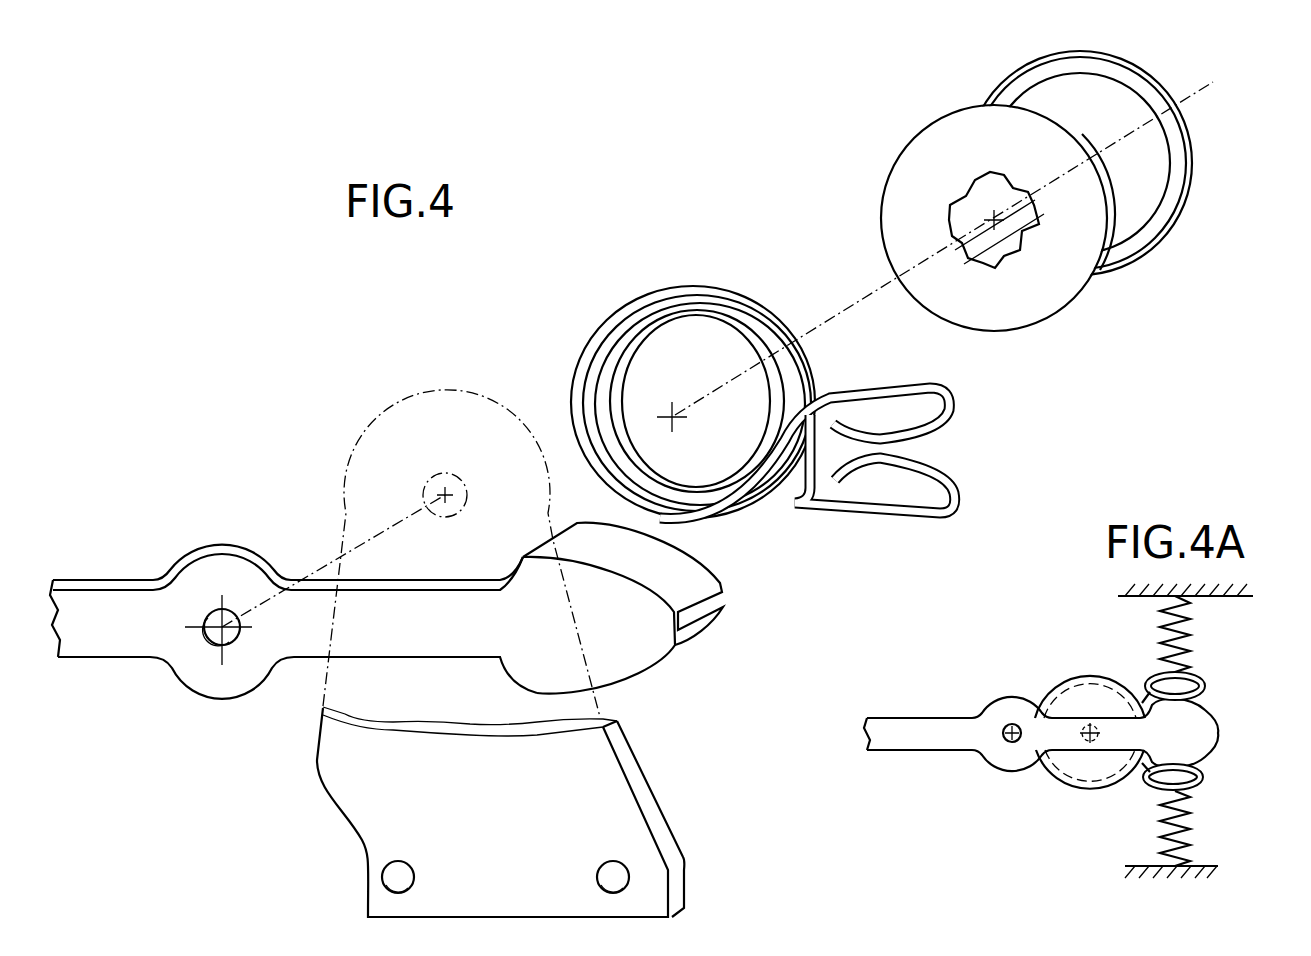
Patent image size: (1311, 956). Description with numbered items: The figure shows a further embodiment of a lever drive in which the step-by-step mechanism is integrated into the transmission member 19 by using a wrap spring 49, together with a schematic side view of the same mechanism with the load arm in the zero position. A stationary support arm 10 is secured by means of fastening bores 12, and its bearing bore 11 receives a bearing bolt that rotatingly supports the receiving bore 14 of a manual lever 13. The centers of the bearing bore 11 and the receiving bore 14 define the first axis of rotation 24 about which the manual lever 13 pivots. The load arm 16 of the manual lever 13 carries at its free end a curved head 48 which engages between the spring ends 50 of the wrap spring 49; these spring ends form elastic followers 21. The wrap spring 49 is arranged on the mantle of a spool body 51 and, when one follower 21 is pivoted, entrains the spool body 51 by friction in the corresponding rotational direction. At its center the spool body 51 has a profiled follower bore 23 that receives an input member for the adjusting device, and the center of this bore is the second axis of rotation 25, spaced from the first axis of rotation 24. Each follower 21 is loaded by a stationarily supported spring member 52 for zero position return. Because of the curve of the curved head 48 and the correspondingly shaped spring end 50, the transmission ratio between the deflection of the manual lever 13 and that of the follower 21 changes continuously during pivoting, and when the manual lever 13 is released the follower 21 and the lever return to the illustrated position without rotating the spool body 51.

In FIG. 4, the support arm 10 is at (476, 863).
In FIG. 4, the bearing bore 11 is at (425, 490).
In FIG. 4, the fastening bores 12 is at (400, 873).
In FIG. 4, the manual lever 13 is at (105, 657).
In FIG. 4A, the manual lever 13 is at (918, 752).
In FIG. 4, the receiving bore 14 is at (215, 611).
In FIG. 4, the load arm 16 is at (426, 594).
In FIG. 4A, the load arm 16 is at (1074, 731).
In FIG. 4, the transmission member 19 is at (763, 366).
In FIG. 4, the followers 21 is at (807, 469).
In FIG. 4A, the followers 21 is at (1205, 688).
In FIG. 4, the follower bore 23 is at (950, 203).
In FIG. 4A, the follower bore 23 is at (1093, 698).
In FIG. 4, the first axis of rotation 24 is at (322, 562).
In FIG. 4A, the first axis of rotation 24 is at (1008, 740).
In FIG. 4, the second axis of rotation 25 is at (855, 304).
In FIG. 4A, the second axis of rotation 25 is at (1088, 736).
In FIG. 4, the curved head 48 is at (680, 575).
In FIG. 4A, the curved head 48 is at (1192, 733).
In FIG. 4, the wrap spring 49 is at (698, 313).
In FIG. 4, the spring ends 50 is at (807, 469).
In FIG. 4, the spool body 51 is at (1038, 282).
In FIG. 4A, the spring member 52 is at (1188, 632).